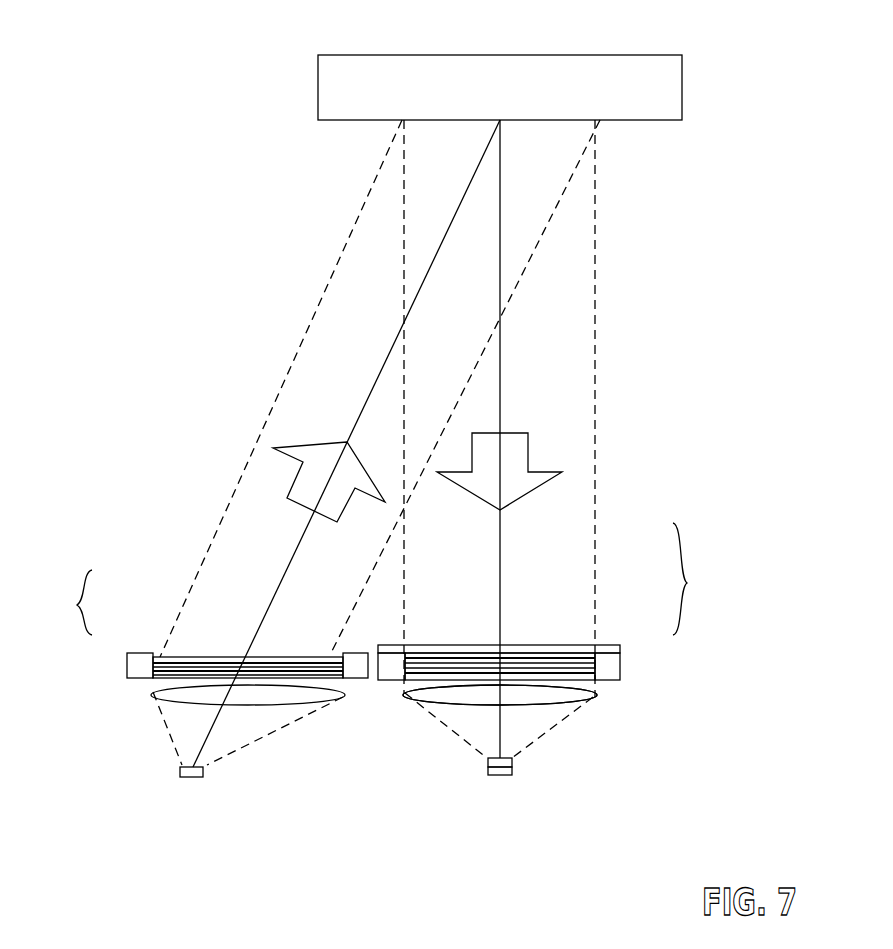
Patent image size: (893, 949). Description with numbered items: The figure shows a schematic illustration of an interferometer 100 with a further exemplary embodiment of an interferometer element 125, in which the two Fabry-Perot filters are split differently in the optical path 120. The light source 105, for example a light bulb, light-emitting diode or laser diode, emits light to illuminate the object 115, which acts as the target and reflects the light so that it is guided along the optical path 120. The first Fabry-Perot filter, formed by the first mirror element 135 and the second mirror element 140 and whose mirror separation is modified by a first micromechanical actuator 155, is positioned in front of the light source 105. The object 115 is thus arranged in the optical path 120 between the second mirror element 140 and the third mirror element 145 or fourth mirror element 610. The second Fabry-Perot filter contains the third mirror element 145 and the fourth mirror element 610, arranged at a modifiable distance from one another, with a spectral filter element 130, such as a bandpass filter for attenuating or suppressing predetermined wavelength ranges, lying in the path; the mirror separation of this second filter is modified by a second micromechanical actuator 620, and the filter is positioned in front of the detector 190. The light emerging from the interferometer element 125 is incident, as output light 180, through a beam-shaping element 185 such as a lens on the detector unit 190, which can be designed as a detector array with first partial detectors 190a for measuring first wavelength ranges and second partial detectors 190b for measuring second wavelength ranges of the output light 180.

The interferometer 100 is at (213, 98).
The object 115 is at (519, 101).
The optical path 120 is at (505, 342).
The interferometer element 125 is at (177, 568).
The spectral filter element 130 is at (547, 647).
The fourth mirror element 610 is at (572, 658).
The third mirror element 145 is at (588, 658).
The second mirror element 140 is at (190, 660).
The first mirror element 135 is at (182, 673).
The first micromechanical actuator 155 is at (127, 665).
The second micromechanical actuator 620 is at (613, 663).
The output light 180 is at (210, 728).
The beam-shaping element 185 is at (597, 690).
The light source 105 is at (196, 778).
The detector unit 190 is at (539, 805).
The first partial detectors 190a is at (512, 762).
The second partial detectors 190b is at (512, 775).